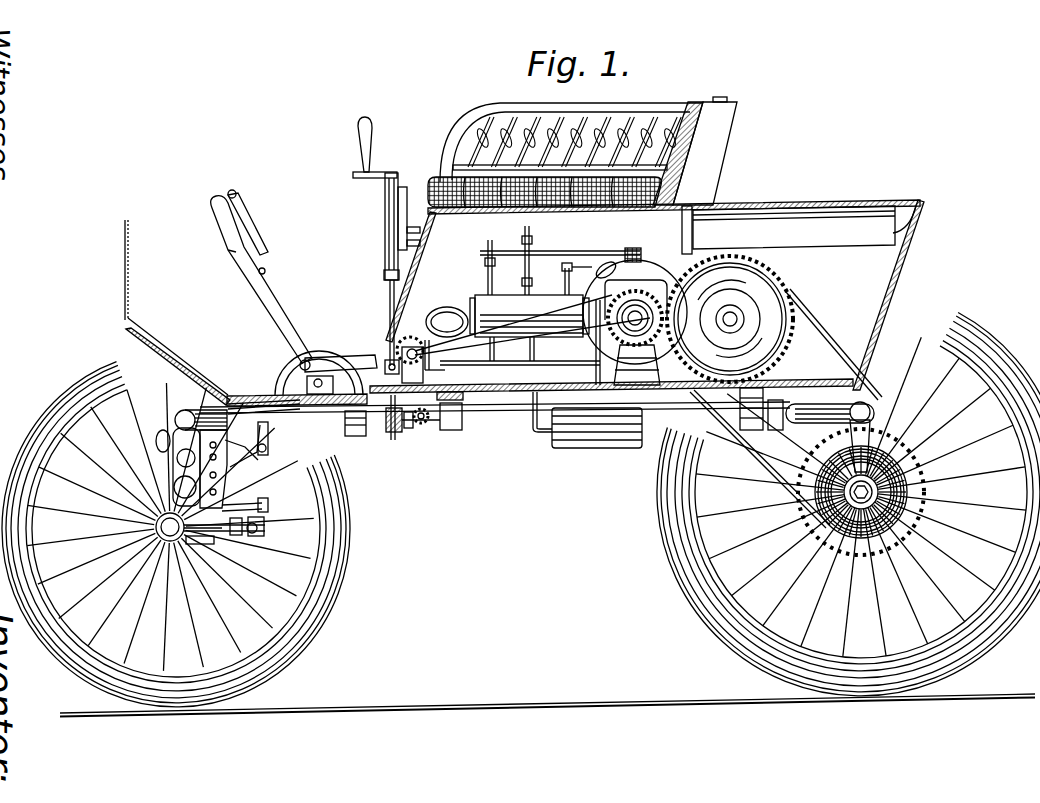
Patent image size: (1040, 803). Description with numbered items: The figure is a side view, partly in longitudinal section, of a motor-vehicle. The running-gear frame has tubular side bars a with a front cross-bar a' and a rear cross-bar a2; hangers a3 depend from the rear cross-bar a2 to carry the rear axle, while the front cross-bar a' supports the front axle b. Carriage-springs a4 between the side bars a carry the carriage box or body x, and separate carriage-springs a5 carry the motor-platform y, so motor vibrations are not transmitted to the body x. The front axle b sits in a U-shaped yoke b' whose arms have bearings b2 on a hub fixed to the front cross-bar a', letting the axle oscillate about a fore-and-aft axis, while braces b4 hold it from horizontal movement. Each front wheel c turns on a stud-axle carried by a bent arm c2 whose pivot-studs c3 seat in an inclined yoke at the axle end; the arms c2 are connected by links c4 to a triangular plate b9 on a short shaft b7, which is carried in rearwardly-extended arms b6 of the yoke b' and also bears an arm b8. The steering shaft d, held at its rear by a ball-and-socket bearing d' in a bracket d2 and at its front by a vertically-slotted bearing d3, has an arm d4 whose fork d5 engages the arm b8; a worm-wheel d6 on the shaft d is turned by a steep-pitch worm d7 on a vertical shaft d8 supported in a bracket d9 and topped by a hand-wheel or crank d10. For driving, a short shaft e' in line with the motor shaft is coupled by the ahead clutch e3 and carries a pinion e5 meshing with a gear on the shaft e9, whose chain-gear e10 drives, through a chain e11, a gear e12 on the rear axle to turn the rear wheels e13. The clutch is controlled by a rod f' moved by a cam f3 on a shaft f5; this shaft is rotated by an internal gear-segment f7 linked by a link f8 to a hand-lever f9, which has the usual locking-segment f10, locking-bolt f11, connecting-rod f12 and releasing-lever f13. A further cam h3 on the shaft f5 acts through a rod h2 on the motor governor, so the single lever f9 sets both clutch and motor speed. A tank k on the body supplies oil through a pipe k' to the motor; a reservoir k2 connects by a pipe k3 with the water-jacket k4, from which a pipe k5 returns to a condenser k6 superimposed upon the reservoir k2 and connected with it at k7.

The side bars a is at (507, 438).
The front cross-bar a' is at (149, 447).
The rear cross-bar a2 is at (868, 404).
The depending arms or hangers a3 is at (874, 427).
The carriage-springs a4 is at (812, 424).
The carriage-springs a5 is at (748, 428).
The front axle b is at (137, 518).
The U-shaped frame or yoke b' is at (170, 467).
The bearings b2 is at (176, 424).
The braces b4 is at (226, 474).
The rearwardly-extended arms b6 is at (243, 510).
The short shaft b7 is at (268, 495).
The arm b8 is at (248, 455).
The triangular plate or yoke b9 is at (268, 530).
The front wheels c is at (346, 563).
The bent arm c2 is at (221, 534).
The pivot-studs c3 is at (222, 545).
The links c4 is at (253, 535).
The shaft d is at (377, 439).
The ball-and-socket bearing d' is at (434, 438).
The bracket d2 is at (421, 433).
The vertically-slotted bearing d3 is at (269, 447).
The arm d4 is at (257, 446).
The fork d5 is at (268, 452).
The worm-wheel d6 is at (417, 427).
The worm d7 is at (395, 433).
The vertical shaft d8 is at (388, 279).
The bracket d9 is at (385, 192).
The hand-wheel or crank d10 is at (353, 175).
The short shaft e' is at (718, 324).
The ahead clutch e3 is at (646, 290).
The pinion e5 is at (620, 290).
The shaft e9 is at (731, 314).
The chain-gear e10 is at (792, 271).
The chain e11 is at (826, 340).
The gear e12 is at (912, 466).
The rear wheels e13 is at (668, 558).
The rod f' is at (529, 306).
The cam f3 is at (458, 310).
The shaft f5 is at (424, 368).
The internal gear-segment f7 is at (410, 335).
The link f8 is at (334, 358).
The hand-lever f9 is at (262, 298).
The locking-segment f10 is at (320, 348).
The locking-bolt f11 is at (283, 337).
The connecting-rod f12 is at (265, 272).
The releasing-lever f13 is at (248, 237).
The rod h2 is at (553, 316).
The cam h3 is at (391, 327).
The tank k is at (593, 152).
The pipe k' is at (714, 214).
The reservoir k2 is at (845, 233).
The pipe k3 is at (554, 262).
The water-jacket k4 is at (486, 285).
The pipe k5 is at (522, 242).
The condenser k6 is at (810, 214).
The connection k7 is at (898, 228).
The carriage box or body x is at (253, 395).
The motor-platform y is at (510, 394).